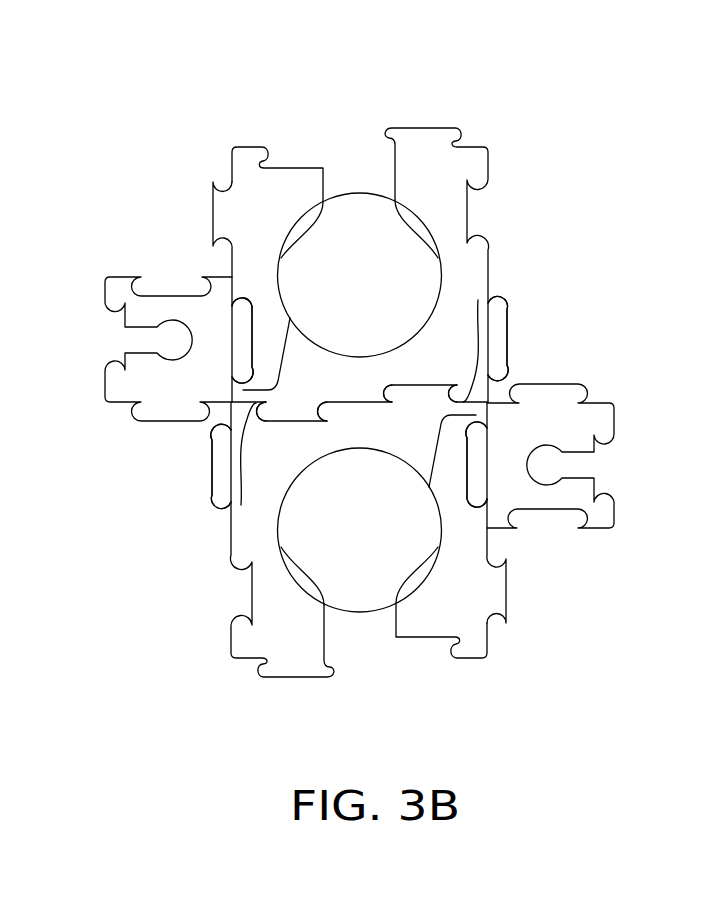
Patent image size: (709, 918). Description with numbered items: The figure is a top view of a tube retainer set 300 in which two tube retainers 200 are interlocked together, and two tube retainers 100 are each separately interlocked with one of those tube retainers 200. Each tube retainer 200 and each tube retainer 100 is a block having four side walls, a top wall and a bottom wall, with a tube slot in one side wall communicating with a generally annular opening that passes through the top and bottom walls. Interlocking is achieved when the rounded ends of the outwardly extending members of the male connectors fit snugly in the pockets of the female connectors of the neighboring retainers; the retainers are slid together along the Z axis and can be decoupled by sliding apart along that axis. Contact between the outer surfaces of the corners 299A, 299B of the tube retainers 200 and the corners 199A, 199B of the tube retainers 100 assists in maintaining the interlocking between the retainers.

The tube retainer set 300 is at (373, 378).
The tube retainer 200 is at (425, 165).
The tube retainer 100 is at (628, 374).
The corner 299A is at (290, 318).
The corner 299B is at (480, 300).
The corner 199A is at (503, 417).
The corner 199B is at (503, 522).